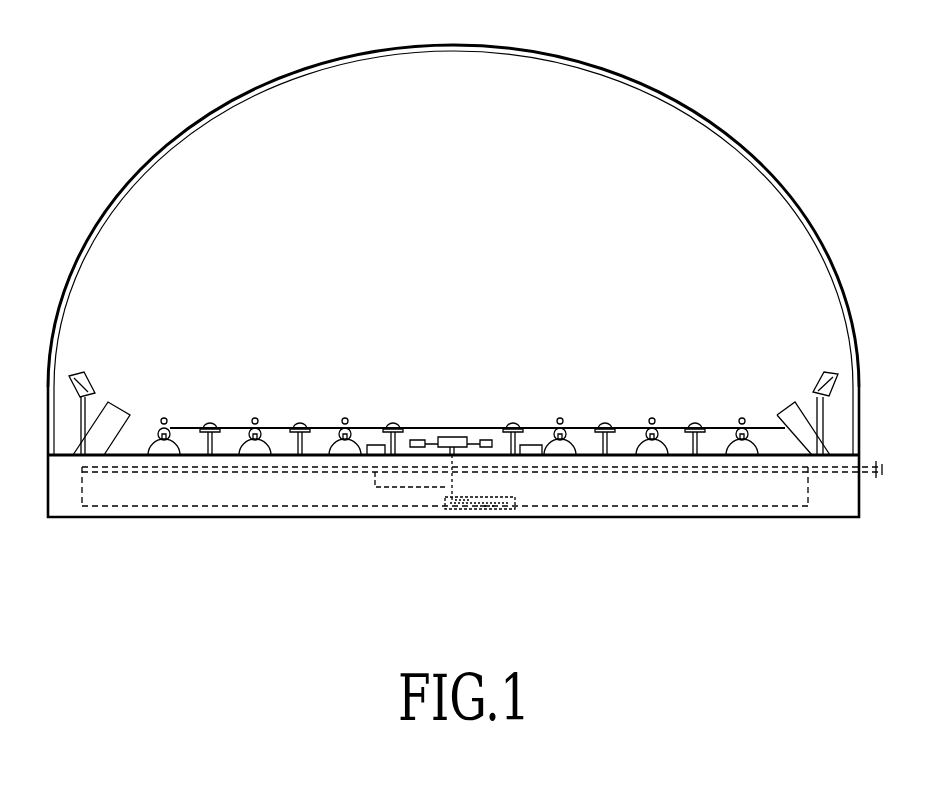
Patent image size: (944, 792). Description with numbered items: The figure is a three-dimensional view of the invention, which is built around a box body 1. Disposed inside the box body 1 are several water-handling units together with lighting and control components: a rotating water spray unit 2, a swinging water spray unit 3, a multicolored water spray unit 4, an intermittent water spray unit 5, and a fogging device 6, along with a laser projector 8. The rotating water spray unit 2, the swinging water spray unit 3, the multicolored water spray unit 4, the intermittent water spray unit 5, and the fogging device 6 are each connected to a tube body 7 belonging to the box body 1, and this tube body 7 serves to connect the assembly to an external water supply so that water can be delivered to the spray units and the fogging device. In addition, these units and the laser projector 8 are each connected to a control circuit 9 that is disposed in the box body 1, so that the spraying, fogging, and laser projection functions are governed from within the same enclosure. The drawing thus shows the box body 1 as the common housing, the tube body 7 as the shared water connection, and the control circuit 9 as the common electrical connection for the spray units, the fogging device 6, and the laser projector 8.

The box body 1 is at (568, 62).
The rotating water spray unit 2 is at (417, 456).
The swinging water spray unit 3 is at (175, 460).
The multicolored water spray unit 4 is at (297, 443).
The intermittent water spray unit 5 is at (122, 432).
The fogging device 6 is at (372, 458).
The tube body 7 is at (637, 470).
The laser projector 8 is at (74, 396).
The control circuit 9 is at (470, 500).